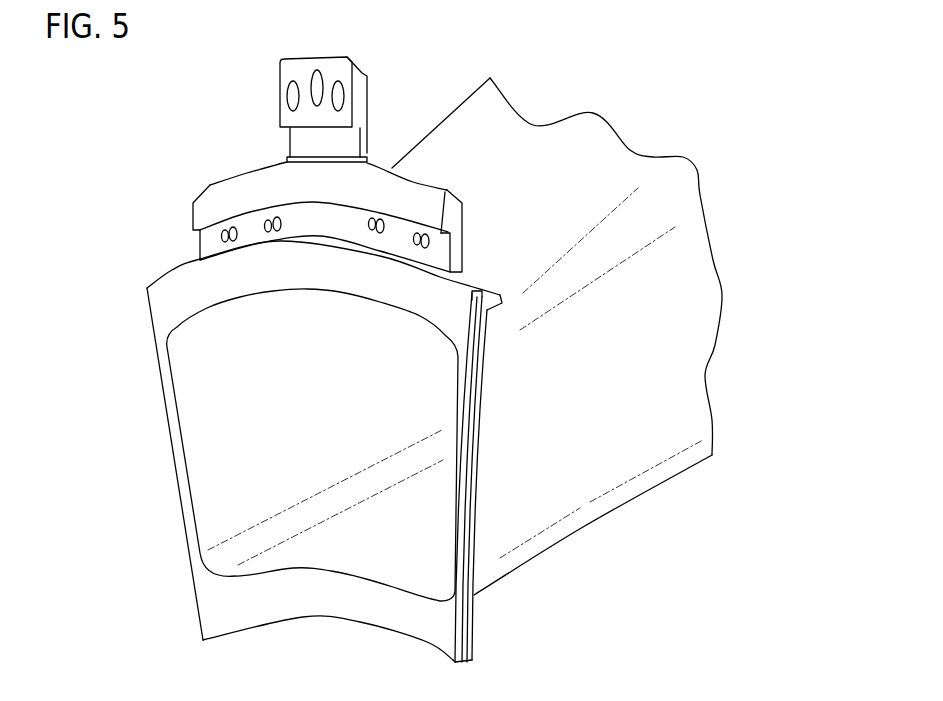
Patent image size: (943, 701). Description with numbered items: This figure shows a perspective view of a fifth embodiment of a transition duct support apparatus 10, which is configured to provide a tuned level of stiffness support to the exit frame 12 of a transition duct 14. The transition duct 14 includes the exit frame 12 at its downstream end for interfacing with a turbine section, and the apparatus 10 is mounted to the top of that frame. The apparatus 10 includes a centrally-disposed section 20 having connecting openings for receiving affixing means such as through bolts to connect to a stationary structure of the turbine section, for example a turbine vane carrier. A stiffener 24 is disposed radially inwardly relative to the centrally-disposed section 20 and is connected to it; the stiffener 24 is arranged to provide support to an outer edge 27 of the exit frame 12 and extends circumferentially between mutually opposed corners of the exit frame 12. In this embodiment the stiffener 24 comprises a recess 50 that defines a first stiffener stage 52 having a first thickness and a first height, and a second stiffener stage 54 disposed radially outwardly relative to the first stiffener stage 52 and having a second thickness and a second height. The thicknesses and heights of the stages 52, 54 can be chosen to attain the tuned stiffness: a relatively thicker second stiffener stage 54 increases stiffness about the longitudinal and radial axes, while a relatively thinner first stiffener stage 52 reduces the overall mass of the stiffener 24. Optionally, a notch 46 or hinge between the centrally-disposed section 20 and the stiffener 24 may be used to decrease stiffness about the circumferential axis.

The transition duct support apparatus 10 is at (203, 168).
The exit frame 12 is at (173, 466).
The transition duct 14 is at (621, 382).
The centrally-disposed section 20 is at (305, 70).
The stiffener 24 is at (254, 192).
The outer edge 27 is at (398, 258).
The notch 46 is at (305, 138).
The recess 50 is at (440, 250).
The first stiffener stage 52 is at (208, 238).
The second stiffener stage 54 is at (208, 210).